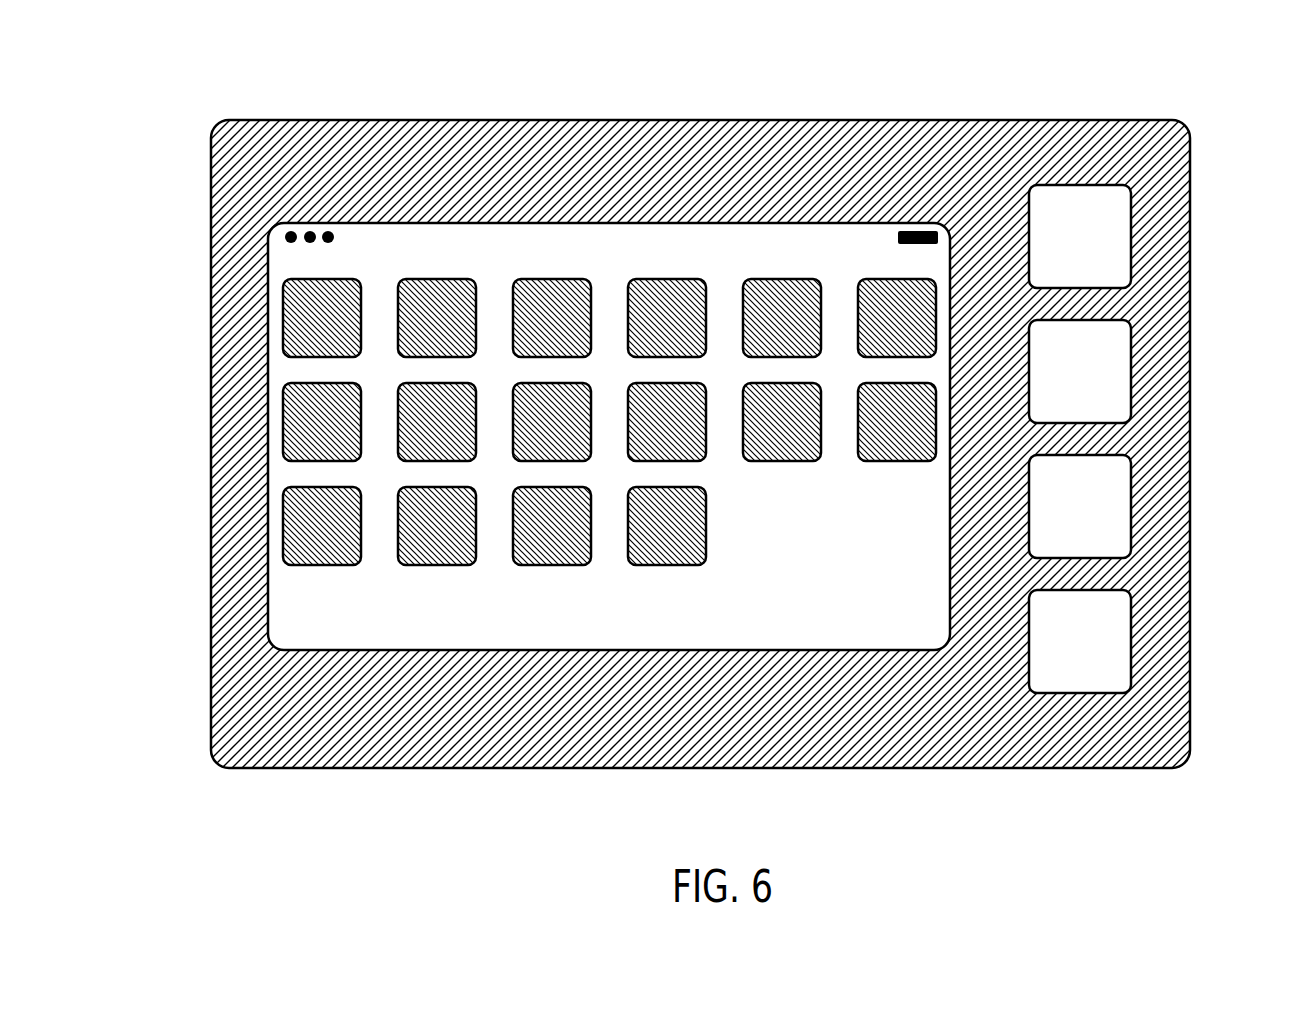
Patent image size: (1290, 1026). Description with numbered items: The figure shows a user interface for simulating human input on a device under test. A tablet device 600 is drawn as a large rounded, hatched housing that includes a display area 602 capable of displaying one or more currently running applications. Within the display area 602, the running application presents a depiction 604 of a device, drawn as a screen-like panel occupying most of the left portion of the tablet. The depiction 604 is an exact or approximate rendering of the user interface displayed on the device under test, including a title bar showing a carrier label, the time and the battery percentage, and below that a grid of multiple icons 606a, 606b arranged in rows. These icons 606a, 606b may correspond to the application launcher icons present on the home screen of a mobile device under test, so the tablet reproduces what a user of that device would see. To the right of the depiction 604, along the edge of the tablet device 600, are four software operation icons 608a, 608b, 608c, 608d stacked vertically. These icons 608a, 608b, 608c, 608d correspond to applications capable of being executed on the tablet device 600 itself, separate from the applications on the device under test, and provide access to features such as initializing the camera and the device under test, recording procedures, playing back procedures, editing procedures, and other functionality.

The tablet device 600 is at (180, 70).
The display area 602 is at (210, 190).
The depiction of a device 604 is at (267, 398).
The icon 606a is at (706, 532).
The icon 606b is at (540, 565).
The operation icon 608a is at (1131, 240).
The operation icon 608b is at (1131, 375).
The operation icon 608c is at (1131, 510).
The operation icon 608d is at (1131, 645).